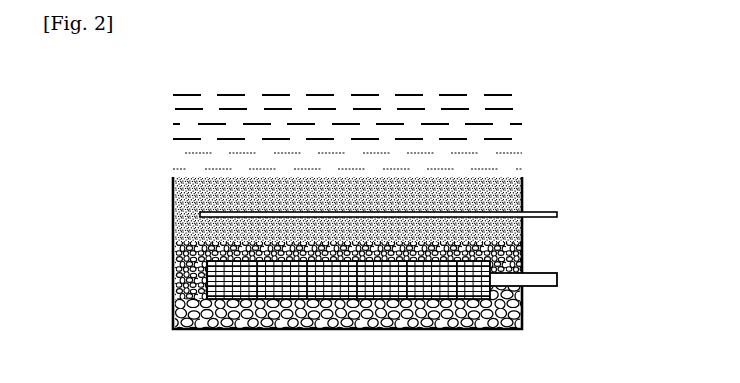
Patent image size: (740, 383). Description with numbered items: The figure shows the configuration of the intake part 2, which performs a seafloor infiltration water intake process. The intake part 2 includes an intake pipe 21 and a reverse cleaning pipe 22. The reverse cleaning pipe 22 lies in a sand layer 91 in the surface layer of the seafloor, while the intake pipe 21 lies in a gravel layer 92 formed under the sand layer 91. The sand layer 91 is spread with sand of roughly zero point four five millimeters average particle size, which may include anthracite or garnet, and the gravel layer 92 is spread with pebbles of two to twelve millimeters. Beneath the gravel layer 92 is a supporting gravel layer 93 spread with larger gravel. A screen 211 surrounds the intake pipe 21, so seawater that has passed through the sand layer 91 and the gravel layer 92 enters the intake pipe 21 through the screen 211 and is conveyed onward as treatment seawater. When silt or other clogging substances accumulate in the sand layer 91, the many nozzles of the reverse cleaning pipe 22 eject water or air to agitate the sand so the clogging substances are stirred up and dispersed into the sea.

The intake part 2 is at (563, 336).
The intake pipe 21 is at (545, 288).
The reverse cleaning pipe 22 is at (545, 220).
The screen 211 is at (405, 299).
The sand layer 91 is at (180, 208).
The gravel layer 92 is at (180, 268).
The supporting gravel layer 93 is at (180, 313).